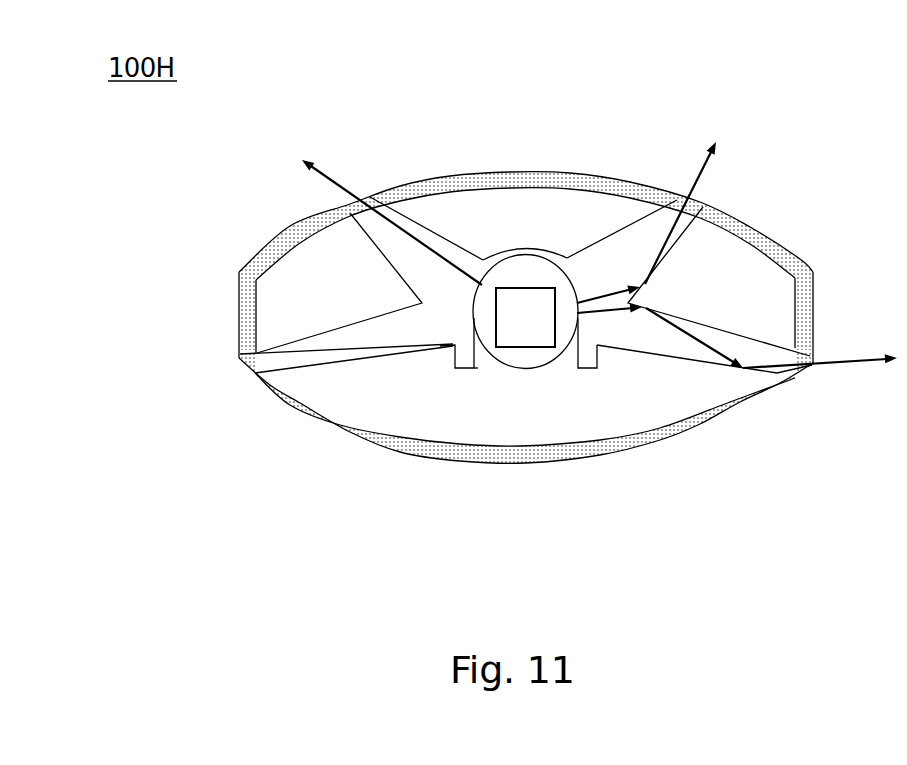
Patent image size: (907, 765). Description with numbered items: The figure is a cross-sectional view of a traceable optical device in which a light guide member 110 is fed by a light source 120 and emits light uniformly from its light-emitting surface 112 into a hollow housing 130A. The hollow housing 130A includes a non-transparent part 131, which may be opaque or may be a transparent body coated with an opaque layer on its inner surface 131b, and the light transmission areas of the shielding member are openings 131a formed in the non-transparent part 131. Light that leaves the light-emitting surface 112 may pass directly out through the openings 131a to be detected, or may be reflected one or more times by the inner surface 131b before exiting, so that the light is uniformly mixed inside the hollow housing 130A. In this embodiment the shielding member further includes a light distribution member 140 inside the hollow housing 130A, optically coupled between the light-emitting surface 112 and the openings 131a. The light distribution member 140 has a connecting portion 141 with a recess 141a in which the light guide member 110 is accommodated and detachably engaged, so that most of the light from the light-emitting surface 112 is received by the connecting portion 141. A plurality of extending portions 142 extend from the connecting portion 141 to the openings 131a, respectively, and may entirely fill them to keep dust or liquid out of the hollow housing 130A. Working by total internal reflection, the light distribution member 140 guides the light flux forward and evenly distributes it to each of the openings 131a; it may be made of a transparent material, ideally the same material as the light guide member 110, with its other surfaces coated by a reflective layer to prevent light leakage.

The light guide member 110 is at (502, 282).
The light-emitting surface 112 is at (553, 270).
The light source 120 is at (548, 337).
The hollow housing 130A is at (794, 179).
The non-transparent part 131 is at (288, 239).
The openings 131a is at (389, 192).
The inner surface 131b is at (257, 315).
The light distribution member 140 is at (493, 510).
The connecting portion 141 is at (460, 365).
The recess 141a is at (484, 392).
The extending portions 142 is at (390, 345).